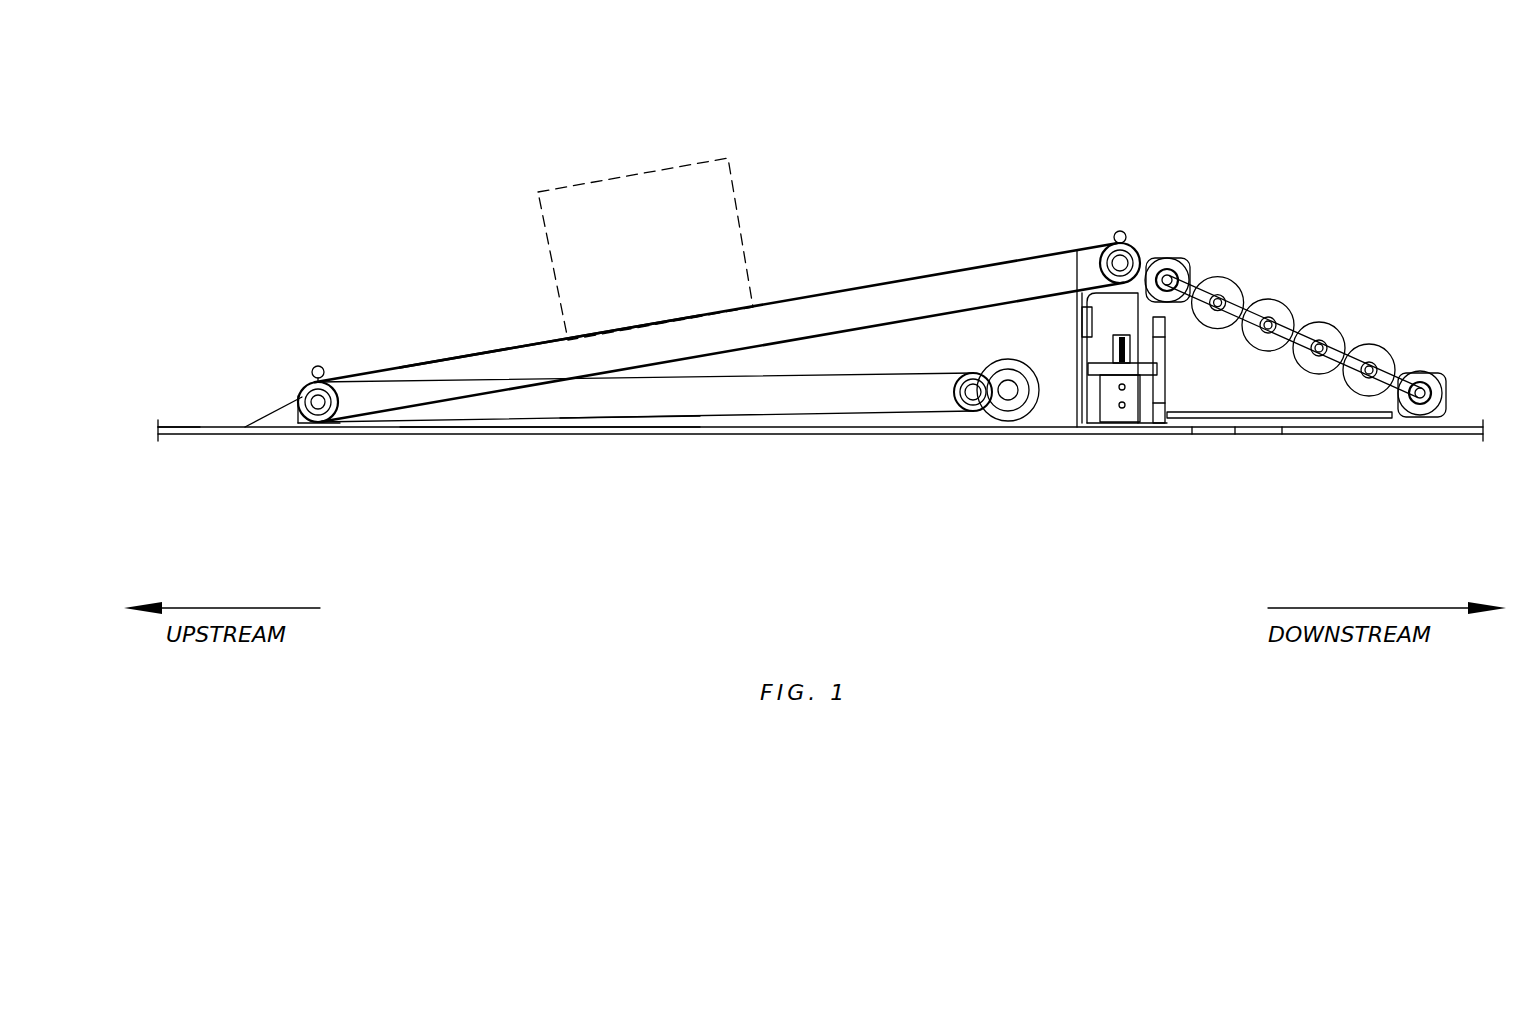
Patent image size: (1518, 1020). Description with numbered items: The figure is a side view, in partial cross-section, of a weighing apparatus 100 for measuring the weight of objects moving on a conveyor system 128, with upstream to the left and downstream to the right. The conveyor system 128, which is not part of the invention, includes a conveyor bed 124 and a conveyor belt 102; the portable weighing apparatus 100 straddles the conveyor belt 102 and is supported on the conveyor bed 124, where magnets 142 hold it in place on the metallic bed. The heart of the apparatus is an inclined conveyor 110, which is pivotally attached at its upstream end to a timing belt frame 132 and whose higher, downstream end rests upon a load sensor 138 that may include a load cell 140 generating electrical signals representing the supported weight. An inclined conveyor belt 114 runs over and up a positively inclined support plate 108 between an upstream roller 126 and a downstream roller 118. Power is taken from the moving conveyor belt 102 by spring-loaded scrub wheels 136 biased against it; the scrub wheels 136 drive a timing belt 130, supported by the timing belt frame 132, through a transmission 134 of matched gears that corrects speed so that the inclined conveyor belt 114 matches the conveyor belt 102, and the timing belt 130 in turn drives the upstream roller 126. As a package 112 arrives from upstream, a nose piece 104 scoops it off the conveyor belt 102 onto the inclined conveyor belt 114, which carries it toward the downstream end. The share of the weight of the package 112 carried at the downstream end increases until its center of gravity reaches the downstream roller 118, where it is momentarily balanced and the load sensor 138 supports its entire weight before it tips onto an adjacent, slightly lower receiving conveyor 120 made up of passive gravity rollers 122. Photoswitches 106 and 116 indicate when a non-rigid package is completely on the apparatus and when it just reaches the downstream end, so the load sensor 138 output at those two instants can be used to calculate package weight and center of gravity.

The weighing apparatus 100 is at (516, 71).
The conveyor belt 102 is at (192, 422).
The nose piece 104 is at (268, 397).
The photoswitch 106 is at (318, 366).
The positively inclined support plate 108 is at (458, 373).
The inclined conveyor 110 is at (514, 337).
The package 112 is at (740, 222).
The inclined conveyor belt 114 is at (963, 270).
The photoswitch 116 is at (1120, 231).
The downstream roller 118 is at (1170, 260).
The receiving conveyor 120 is at (1314, 298).
The passive gravity rollers 122 is at (1378, 349).
The conveyor bed 124 is at (212, 434).
The upstream roller 126 is at (307, 436).
The conveyor system 128 is at (524, 448).
The timing belt 130 is at (623, 420).
The timing belt frame 132 is at (715, 395).
The transmission 134 is at (958, 390).
The scrub wheels 136 is at (983, 420).
The load sensor 138 is at (1067, 370).
The load cell 140 is at (1122, 348).
The magnets 142 is at (1258, 437).